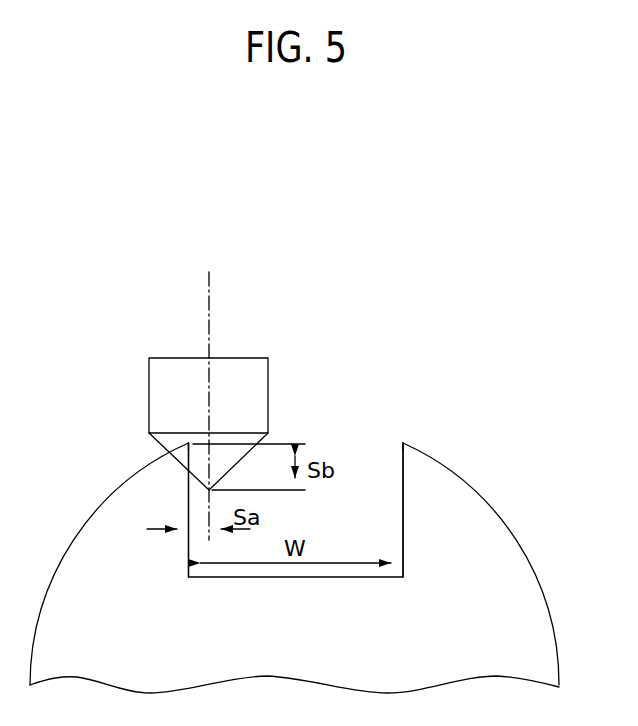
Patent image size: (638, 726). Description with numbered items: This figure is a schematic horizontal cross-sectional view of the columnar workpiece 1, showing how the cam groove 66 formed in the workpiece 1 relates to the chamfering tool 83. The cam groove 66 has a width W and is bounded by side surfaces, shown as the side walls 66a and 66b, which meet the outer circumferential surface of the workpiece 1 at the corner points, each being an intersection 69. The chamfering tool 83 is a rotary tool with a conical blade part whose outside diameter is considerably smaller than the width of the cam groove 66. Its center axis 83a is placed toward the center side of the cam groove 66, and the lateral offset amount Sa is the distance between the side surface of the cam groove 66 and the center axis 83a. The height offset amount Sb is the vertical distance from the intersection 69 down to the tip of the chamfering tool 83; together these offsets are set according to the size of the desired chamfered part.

The workpiece 1 is at (483, 497).
The cam groove 66 is at (365, 516).
The groove side wall 66a is at (190, 508).
The groove side wall 66b is at (395, 470).
The intersection 69 is at (188, 443).
The chamfering tool 83 is at (172, 372).
The center axis 83a is at (210, 283).